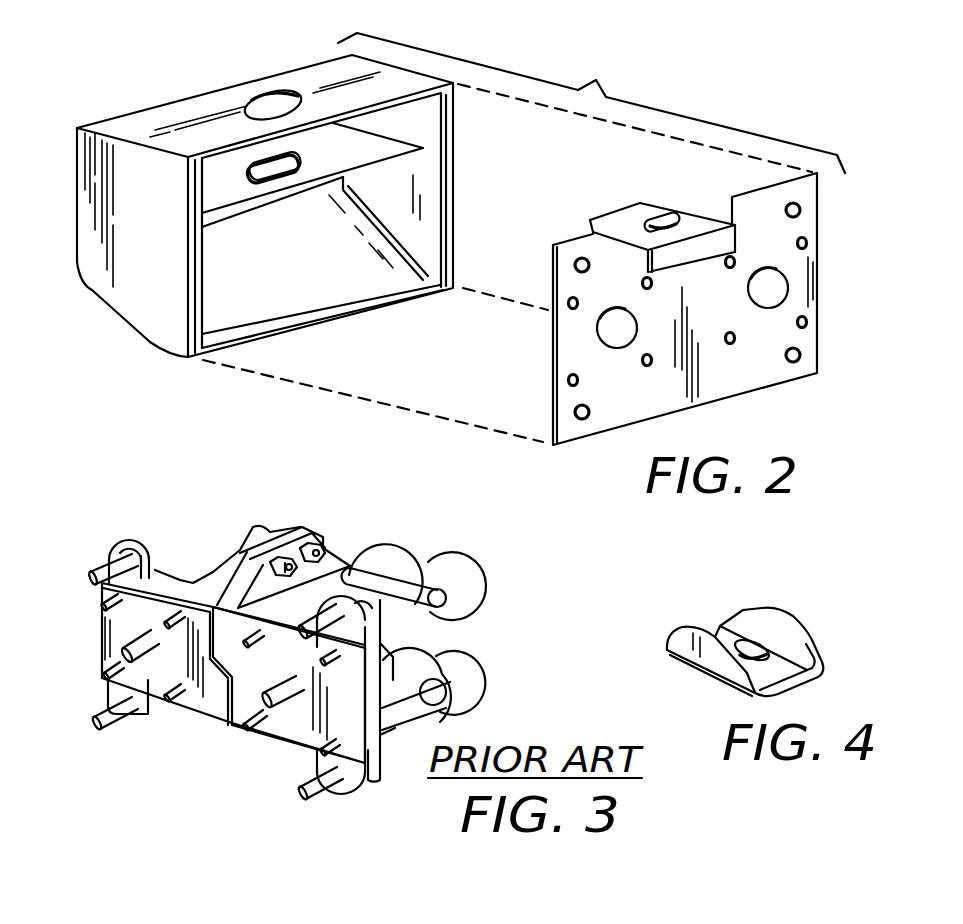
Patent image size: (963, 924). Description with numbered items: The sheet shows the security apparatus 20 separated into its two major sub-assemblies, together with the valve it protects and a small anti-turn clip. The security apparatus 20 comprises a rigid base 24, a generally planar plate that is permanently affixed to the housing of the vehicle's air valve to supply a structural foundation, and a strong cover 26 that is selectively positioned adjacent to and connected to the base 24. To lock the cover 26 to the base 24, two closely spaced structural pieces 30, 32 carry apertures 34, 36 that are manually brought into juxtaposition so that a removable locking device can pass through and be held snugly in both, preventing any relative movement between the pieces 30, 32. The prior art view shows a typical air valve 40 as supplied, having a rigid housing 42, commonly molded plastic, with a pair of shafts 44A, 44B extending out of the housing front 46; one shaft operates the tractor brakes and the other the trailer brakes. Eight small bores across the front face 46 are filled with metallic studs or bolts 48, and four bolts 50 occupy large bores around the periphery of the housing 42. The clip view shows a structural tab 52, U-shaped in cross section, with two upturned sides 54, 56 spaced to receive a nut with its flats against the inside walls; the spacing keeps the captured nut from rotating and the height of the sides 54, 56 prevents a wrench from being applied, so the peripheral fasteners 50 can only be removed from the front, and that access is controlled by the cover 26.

In FIG. 2, the security apparatus 20 is at (524, 237).
In FIG. 2, the rigid base 24 is at (737, 373).
In FIG. 2, the cover 26 is at (167, 127).
In FIG. 2, the structural piece 30 is at (693, 225).
In FIG. 2, the structural piece 32 is at (362, 158).
In FIG. 2, the aperture 34 is at (666, 214).
In FIG. 2, the aperture 36 is at (252, 170).
In FIG. 3, the air valve 40 is at (352, 520).
In FIG. 3, the valve housing 42 is at (404, 552).
In FIG. 3, the shaft 44A is at (288, 707).
In FIG. 3, the shaft 44B is at (140, 650).
In FIG. 3, the housing front 46 is at (217, 690).
In FIG. 3, the studs or bolts 48 is at (178, 702).
In FIG. 3, the bolts 50 is at (112, 572).
In FIG. 4, the structural tab 52 is at (832, 634).
In FIG. 4, the upturned side 54 is at (702, 632).
In FIG. 4, the upturned side 56 is at (783, 617).